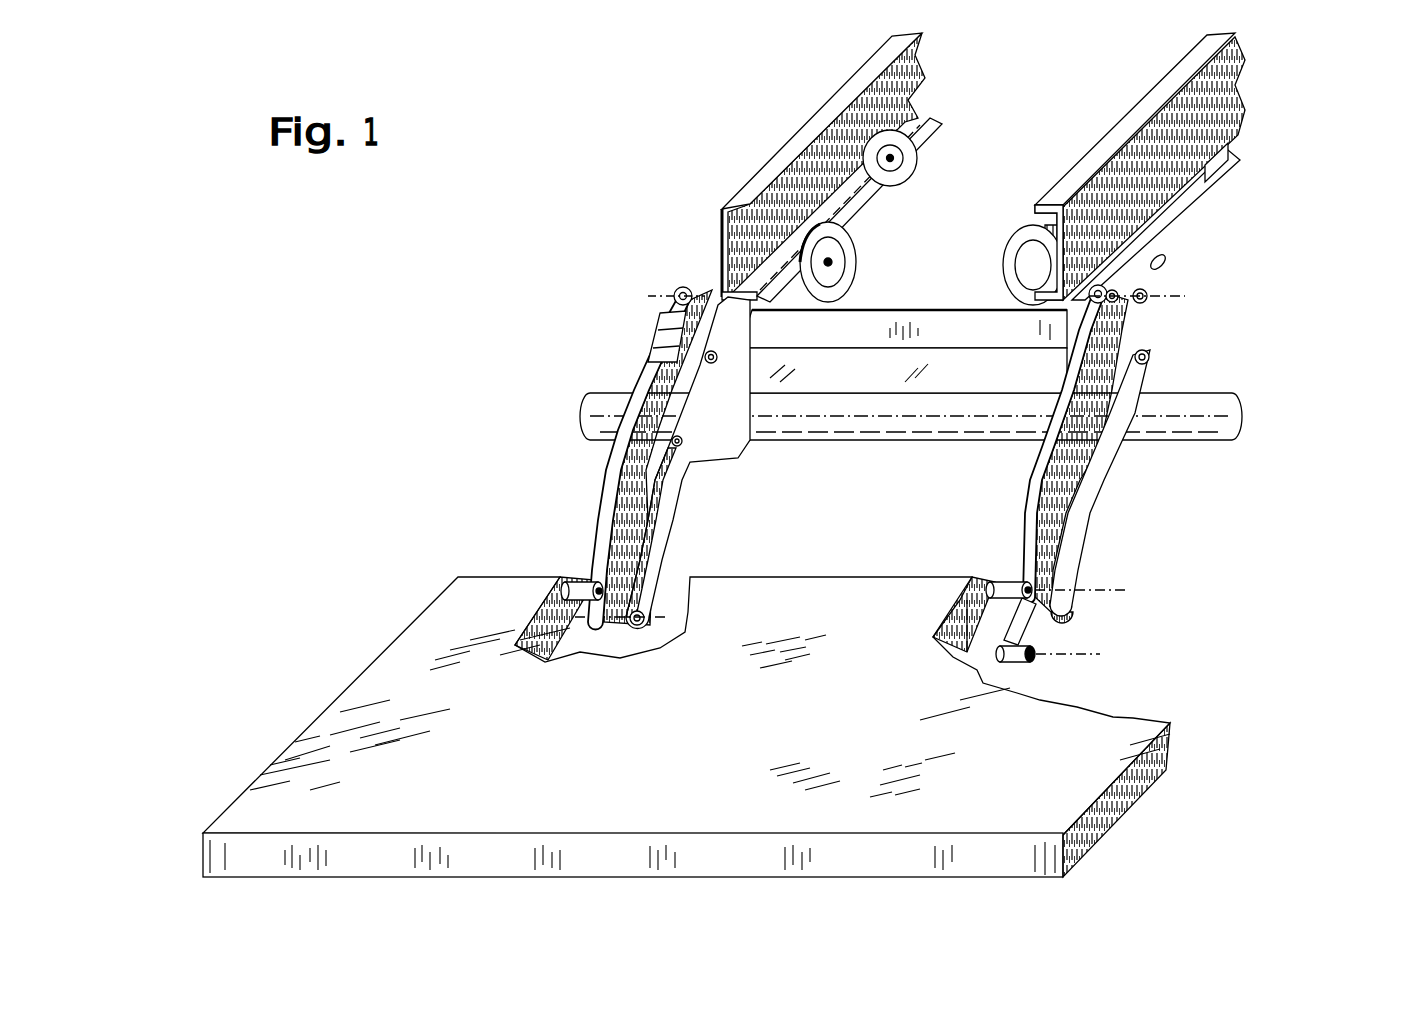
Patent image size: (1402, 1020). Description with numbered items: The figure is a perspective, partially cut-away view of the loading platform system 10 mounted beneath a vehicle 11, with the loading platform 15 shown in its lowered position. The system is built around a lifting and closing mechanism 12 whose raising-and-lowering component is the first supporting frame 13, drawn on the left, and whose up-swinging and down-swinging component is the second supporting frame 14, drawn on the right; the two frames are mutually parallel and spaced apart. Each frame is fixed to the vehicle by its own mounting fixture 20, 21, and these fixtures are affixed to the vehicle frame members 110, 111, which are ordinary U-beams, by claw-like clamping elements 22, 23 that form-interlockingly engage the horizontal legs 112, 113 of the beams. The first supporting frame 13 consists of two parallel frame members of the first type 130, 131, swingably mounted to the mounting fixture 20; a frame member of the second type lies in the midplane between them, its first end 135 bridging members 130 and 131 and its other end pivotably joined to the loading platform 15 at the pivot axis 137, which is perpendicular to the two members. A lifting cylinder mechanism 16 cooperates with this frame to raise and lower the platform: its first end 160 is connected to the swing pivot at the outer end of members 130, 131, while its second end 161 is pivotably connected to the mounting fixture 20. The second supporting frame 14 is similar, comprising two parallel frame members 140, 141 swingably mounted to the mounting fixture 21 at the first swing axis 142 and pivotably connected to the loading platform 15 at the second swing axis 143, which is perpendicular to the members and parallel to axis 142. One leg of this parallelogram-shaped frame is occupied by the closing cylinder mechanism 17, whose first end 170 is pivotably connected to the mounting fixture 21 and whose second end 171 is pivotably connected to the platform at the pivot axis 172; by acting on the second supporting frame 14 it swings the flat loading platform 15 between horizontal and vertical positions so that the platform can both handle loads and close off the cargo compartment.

The loading platform system 10 is at (508, 315).
The vehicle 11 is at (1195, 33).
The frame member 110 is at (813, 167).
The frame member 111 is at (1132, 166).
The horizontal leg 112 is at (917, 118).
The horizontal leg 113 is at (1008, 272).
The lifting and closing mechanism 12 is at (997, 493).
The first supporting frame 13 is at (572, 482).
The frame member of the first type 130 is at (588, 463).
The frame member of the first type 131 is at (647, 508).
The first end of frame member of the second type 135 is at (660, 345).
The pivot axis 137 is at (577, 582).
The second supporting frame 14 is at (1130, 486).
The frame member 140 is at (1020, 528).
The frame member 141 is at (1063, 565).
The first swing axis 142 is at (1150, 290).
The second swing axis 143 is at (1063, 580).
The loading platform 15 is at (1087, 790).
The lifting cylinder mechanism 16 is at (667, 463).
The first end of lifting cylinder mechanism 160 is at (643, 603).
The second end of lifting cylinder mechanism 161 is at (705, 360).
The closing cylinder mechanism 17 is at (1115, 452).
The first end of closing cylinder mechanism 170 is at (1160, 365).
The second end of closing cylinder mechanism 171 is at (1040, 650).
The pivot axis 172 is at (1040, 652).
The mounting fixture 20 is at (673, 283).
The mounting fixture 21 is at (1200, 215).
The claw-like clamping element 22 is at (912, 148).
The claw-like clamping element 23 is at (1018, 240).